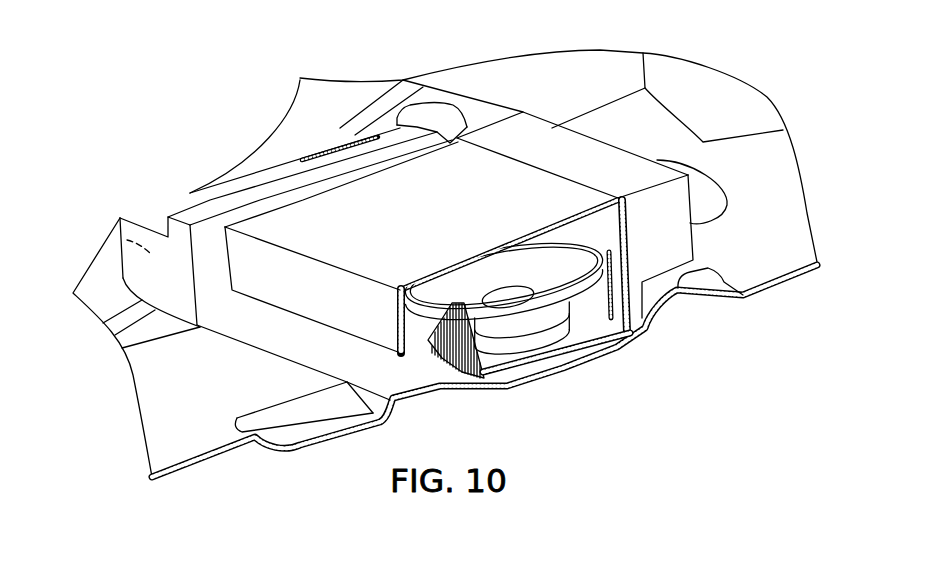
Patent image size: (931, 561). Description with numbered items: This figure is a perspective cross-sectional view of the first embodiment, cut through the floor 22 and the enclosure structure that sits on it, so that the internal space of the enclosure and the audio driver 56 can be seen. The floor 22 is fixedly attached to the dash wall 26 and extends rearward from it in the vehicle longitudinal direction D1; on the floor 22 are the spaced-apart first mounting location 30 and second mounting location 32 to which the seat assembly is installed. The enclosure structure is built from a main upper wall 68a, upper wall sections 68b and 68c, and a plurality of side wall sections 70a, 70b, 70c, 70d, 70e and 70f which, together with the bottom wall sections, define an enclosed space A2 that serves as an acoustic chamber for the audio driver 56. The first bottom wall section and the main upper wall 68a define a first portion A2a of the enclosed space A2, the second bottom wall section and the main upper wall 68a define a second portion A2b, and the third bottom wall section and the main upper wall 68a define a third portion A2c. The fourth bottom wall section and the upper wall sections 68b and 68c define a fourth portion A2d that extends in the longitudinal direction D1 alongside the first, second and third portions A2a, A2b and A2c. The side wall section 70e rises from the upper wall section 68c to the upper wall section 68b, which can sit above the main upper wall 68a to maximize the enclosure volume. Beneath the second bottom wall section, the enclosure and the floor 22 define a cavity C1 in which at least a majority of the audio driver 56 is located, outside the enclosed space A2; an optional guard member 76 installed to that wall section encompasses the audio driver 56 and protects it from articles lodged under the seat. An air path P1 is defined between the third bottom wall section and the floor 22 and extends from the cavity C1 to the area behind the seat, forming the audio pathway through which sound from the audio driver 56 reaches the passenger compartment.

The dash wall 26 is at (705, 87).
The floor 22 is at (170, 392).
The side wall section 70d is at (133, 213).
The fourth portion of the enclosed space A2d is at (120, 241).
The upper wall section 68c is at (180, 203).
The side wall section 70e is at (237, 187).
The upper wall section 68b is at (320, 170).
The main upper wall 68a is at (477, 170).
The first portion of the enclosed space A2a is at (660, 210).
The side wall section 70f is at (695, 238).
The first mounting location 30 is at (713, 285).
The second portion of the enclosed space A2b is at (577, 243).
The enclosed space A2 is at (608, 232).
The third portion of the enclosed space A2c is at (413, 330).
The side wall section 70b is at (210, 261).
The side wall section 70c is at (168, 293).
The side wall section 70a is at (342, 333).
The air path P1 is at (270, 313).
The second mounting location 32 is at (312, 433).
The guard member 76 is at (465, 373).
The audio driver 56 is at (517, 327).
The cavity C1 is at (563, 357).
The vehicle longitudinal direction D1 is at (640, 407).